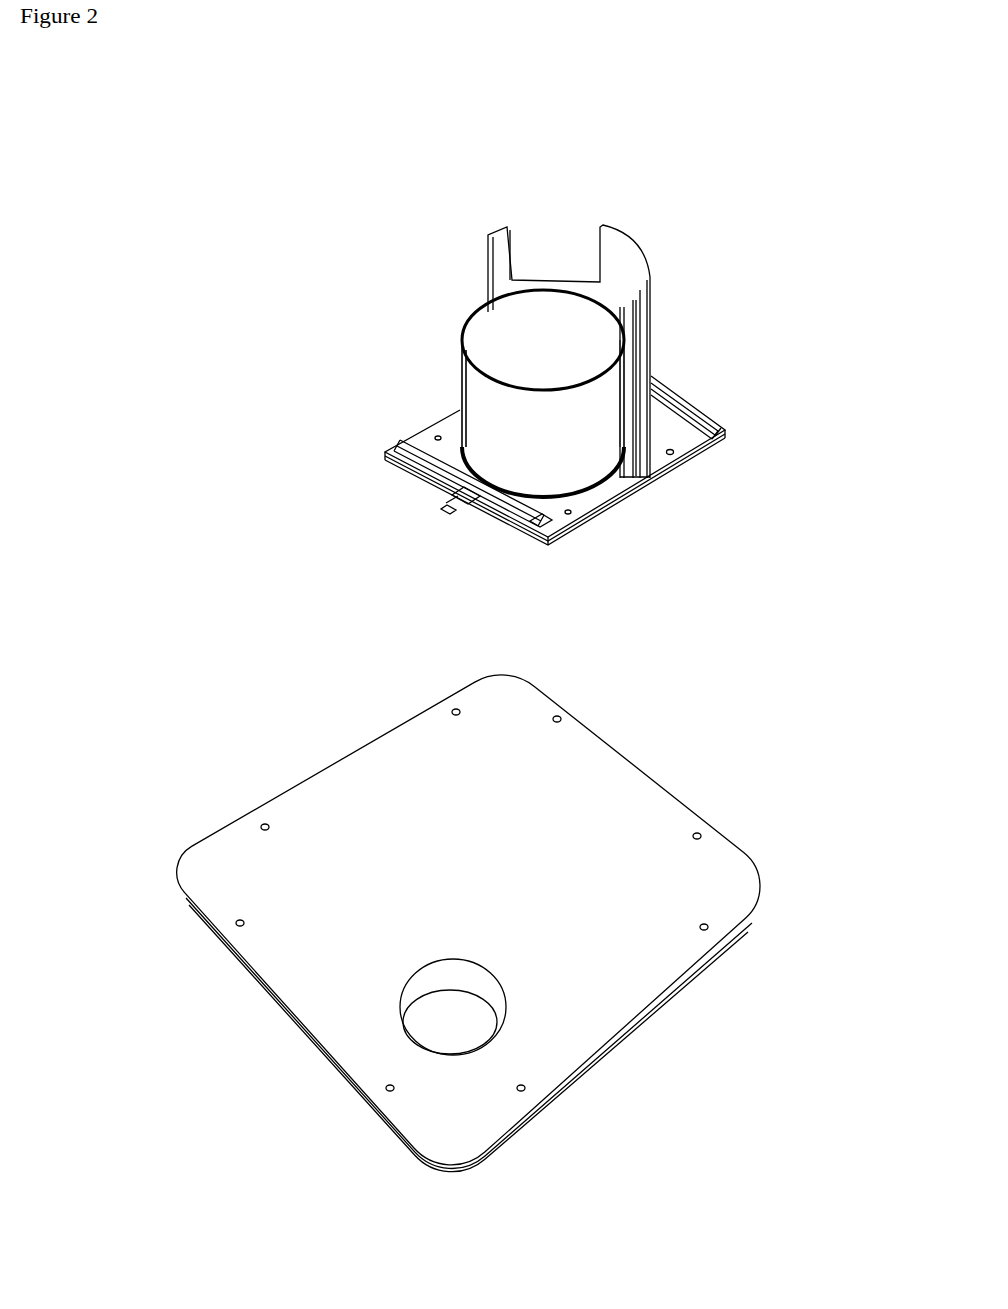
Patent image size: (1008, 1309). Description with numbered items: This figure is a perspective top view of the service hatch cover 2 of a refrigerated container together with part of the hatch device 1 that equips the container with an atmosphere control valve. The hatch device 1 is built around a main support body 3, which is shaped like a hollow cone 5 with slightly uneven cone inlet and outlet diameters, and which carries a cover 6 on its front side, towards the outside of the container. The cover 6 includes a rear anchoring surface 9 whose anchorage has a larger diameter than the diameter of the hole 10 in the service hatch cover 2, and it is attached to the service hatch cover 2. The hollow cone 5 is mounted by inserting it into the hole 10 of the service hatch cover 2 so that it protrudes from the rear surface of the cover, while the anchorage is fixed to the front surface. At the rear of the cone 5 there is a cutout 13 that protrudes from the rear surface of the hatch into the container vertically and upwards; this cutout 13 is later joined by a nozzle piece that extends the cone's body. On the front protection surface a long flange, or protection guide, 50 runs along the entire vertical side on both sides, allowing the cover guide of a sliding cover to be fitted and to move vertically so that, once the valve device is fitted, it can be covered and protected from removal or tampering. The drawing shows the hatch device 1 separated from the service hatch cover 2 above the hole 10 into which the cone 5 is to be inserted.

The hatch device 1 is at (257, 565).
The service hatch cover 2 is at (327, 872).
The main support body 3 is at (655, 308).
The hollow cone 5 is at (653, 373).
The cover 6 is at (547, 507).
The rear anchoring surface 9 is at (676, 452).
The hole 10 is at (433, 1020).
The cutout 13 is at (620, 360).
The long flange or protection guide 50 is at (626, 506).